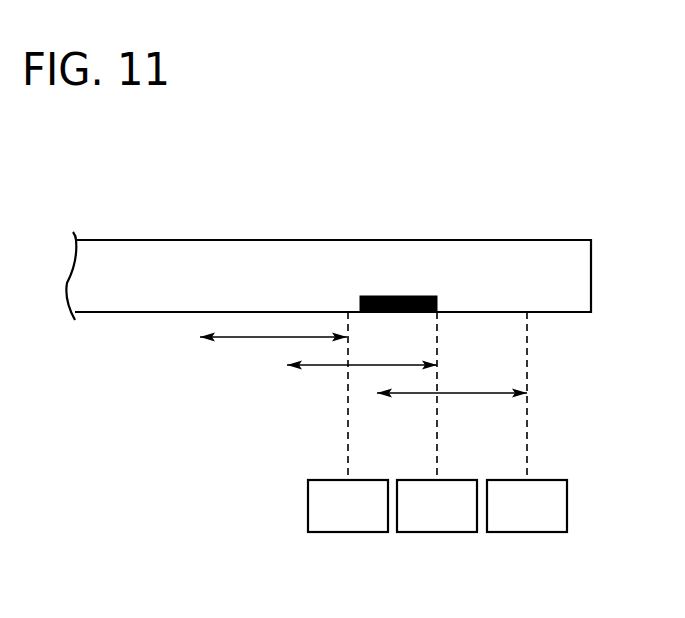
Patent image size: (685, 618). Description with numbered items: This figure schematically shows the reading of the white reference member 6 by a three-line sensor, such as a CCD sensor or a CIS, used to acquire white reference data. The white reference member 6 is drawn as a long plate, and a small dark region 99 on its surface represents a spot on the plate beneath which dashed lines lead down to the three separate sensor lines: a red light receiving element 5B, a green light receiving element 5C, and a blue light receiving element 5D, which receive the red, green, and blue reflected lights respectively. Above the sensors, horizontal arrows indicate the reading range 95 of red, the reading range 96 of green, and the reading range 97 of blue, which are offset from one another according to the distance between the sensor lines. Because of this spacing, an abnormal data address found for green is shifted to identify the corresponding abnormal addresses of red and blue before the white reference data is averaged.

The white reference member 6 is at (578, 283).
The reading range of red 95 is at (258, 337).
The reading range of green 96 is at (317, 365).
The reading range of blue 97 is at (468, 393).
The electrode pad 99 is at (388, 297).
The red light receiving element 5B is at (345, 517).
The green light receiving element 5C is at (434, 517).
The blue light receiving element 5D is at (522, 517).